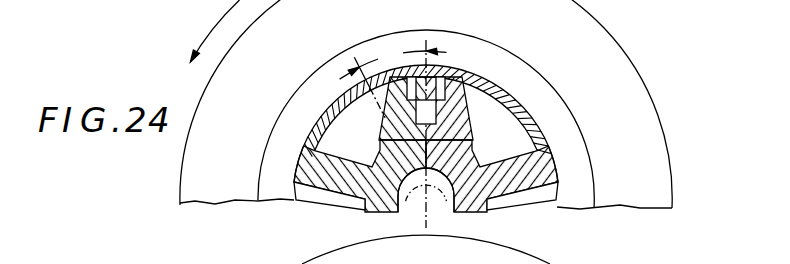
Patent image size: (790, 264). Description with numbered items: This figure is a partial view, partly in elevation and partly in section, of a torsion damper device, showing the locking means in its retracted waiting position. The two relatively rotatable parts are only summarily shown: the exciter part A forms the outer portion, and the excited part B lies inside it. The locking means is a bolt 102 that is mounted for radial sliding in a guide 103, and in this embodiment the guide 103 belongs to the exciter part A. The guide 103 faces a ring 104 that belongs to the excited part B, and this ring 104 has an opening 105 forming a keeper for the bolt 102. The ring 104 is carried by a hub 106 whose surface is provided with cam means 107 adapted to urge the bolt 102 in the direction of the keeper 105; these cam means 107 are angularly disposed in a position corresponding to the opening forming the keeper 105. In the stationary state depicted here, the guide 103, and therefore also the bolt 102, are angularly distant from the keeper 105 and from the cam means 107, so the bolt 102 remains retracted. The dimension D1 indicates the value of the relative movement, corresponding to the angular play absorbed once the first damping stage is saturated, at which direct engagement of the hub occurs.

The exciter part A is at (650, 92).
The excited part B is at (560, 190).
The bolt 102 is at (456, 108).
The guide 103 is at (477, 126).
The ring 104 is at (465, 64).
The opening forming a keeper 105 is at (358, 85).
The hub 106 is at (385, 193).
The cam means 107 is at (393, 143).
The value of the movement D1 is at (393, 81).